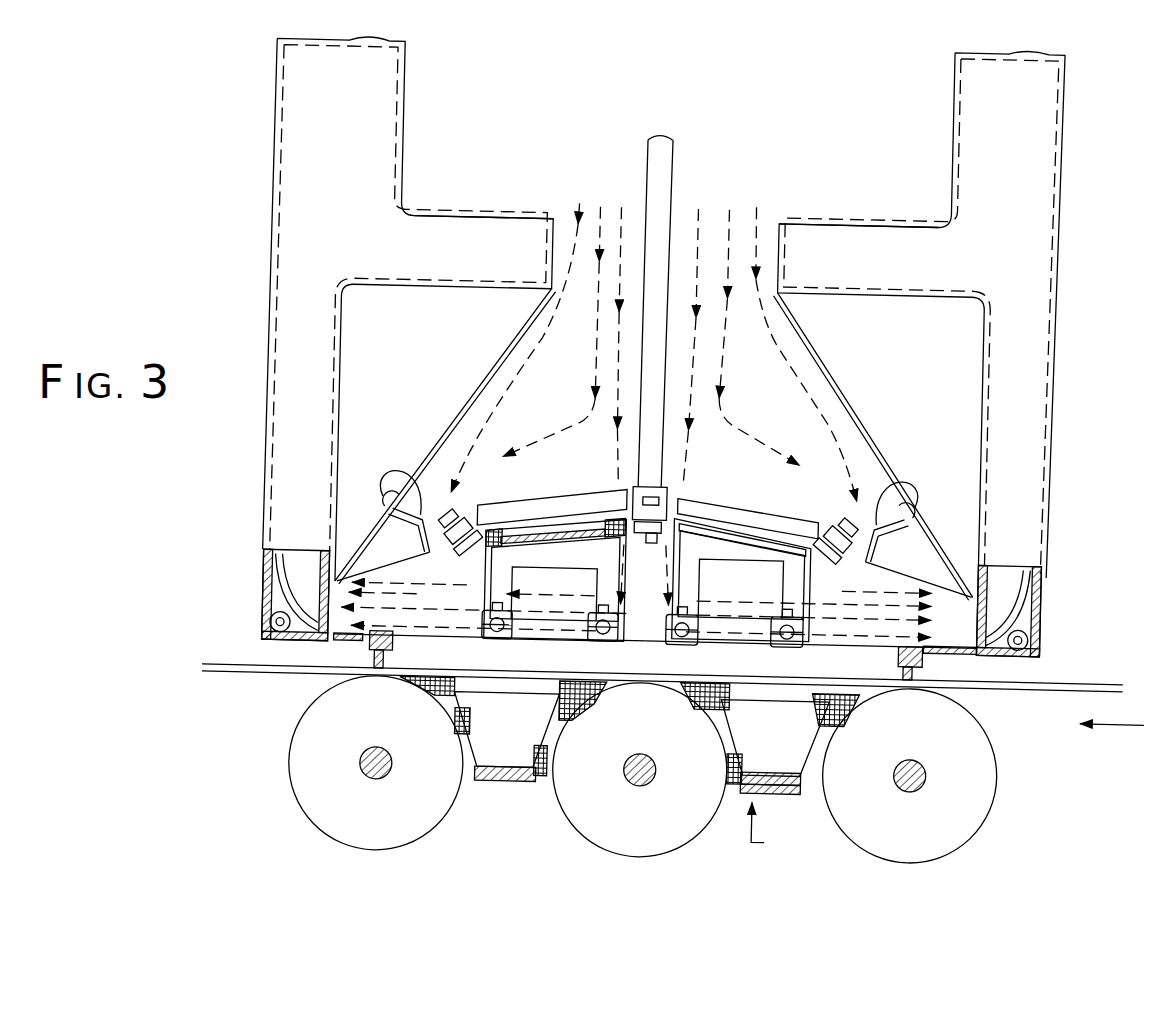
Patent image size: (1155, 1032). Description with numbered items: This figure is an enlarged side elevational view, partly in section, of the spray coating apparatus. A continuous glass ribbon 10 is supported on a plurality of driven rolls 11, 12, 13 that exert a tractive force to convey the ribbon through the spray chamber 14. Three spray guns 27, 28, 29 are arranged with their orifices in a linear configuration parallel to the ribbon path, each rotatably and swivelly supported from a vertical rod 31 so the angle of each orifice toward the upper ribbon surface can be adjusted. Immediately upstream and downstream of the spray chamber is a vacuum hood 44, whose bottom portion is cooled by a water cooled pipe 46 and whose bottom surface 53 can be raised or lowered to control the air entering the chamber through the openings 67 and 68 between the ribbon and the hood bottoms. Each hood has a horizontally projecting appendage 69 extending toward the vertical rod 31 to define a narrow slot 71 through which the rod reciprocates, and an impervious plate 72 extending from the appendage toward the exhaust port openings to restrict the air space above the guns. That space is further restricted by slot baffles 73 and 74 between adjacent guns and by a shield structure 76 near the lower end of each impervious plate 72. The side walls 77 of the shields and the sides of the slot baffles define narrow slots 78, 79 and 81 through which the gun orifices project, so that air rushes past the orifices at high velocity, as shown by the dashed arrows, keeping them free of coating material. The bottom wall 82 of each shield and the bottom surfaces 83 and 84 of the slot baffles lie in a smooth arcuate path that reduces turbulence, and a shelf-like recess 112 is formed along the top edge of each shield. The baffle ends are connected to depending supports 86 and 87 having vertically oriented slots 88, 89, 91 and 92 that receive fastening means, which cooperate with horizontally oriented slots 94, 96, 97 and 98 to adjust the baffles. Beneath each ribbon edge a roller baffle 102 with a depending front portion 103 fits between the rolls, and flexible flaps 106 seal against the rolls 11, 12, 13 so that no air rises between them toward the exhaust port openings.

The continuous glass ribbon 10 is at (240, 680).
The roll 11 is at (980, 820).
The roll 12 is at (635, 838).
The roll 13 is at (310, 820).
The spray chamber 14 is at (635, 614).
The spray gun 27 is at (430, 540).
The spray gun 28 is at (636, 487).
The spray gun 29 is at (872, 540).
The vertical rod 31 is at (642, 160).
The vacuum hood 44 is at (352, 117).
The water cooled pipe 46 is at (270, 627).
The bottom surface 53 is at (1030, 660).
The opening 67 is at (290, 660).
The opening 68 is at (1000, 663).
The horizontally projecting appendage 69 is at (505, 238).
The slot 71 is at (685, 222).
The impervious plate 72 is at (518, 340).
The slot baffle 73 is at (550, 520).
The slot baffle 74 is at (748, 518).
The shield structure 76 is at (412, 570).
The side wall 77 is at (420, 473).
The narrow slot 78 is at (462, 556).
The narrow slot 79 is at (681, 514).
The narrow slot 81 is at (838, 556).
The bottom wall 82 is at (419, 562).
The bottom surface 83 is at (555, 550).
The bottom surface 84 is at (740, 550).
The depending support 86 is at (604, 555).
The depending support 87 is at (776, 562).
The vertically oriented slot 88 is at (492, 643).
The vertically oriented slot 89 is at (618, 643).
The vertically oriented slot 91 is at (678, 645).
The vertically oriented slot 92 is at (782, 645).
The horizontally oriented slot 94 is at (512, 643).
The horizontally oriented slot 96 is at (600, 643).
The horizontally oriented slot 97 is at (700, 645).
The horizontally oriented slot 98 is at (800, 645).
The roller baffle 102 is at (778, 826).
The depending front portion 103 is at (540, 745).
The flexible flap 106 is at (482, 778).
The shelf-like recess 112 is at (394, 493).